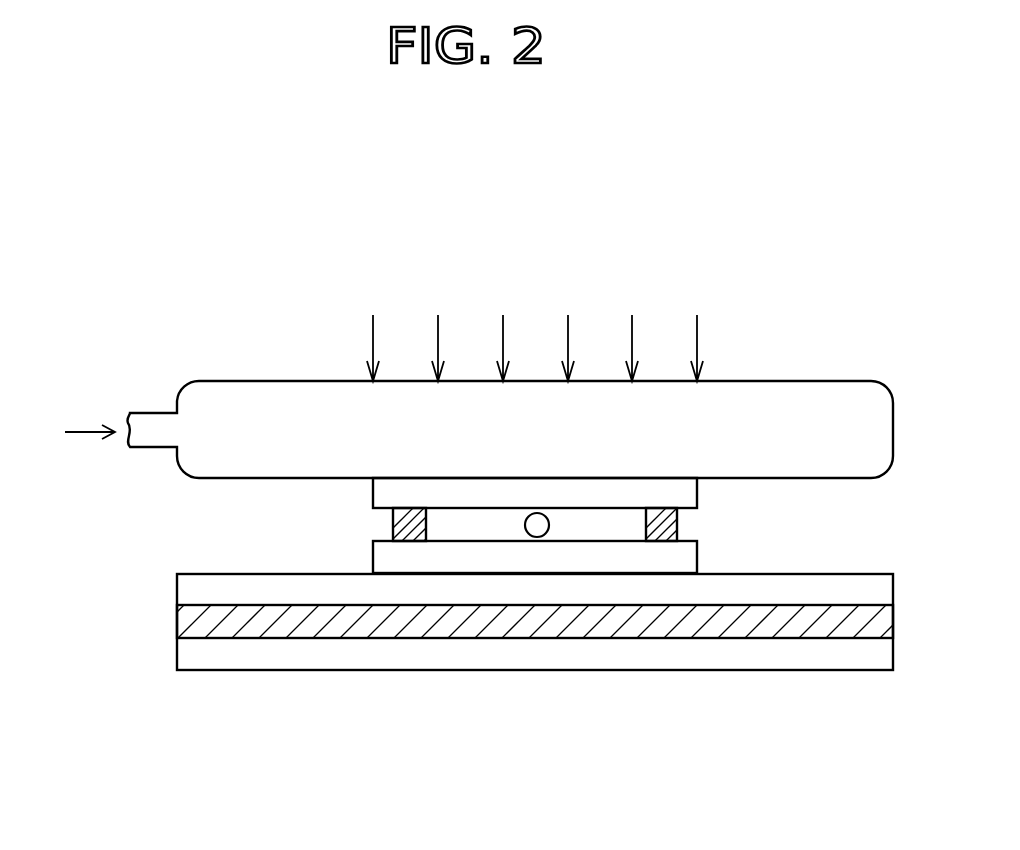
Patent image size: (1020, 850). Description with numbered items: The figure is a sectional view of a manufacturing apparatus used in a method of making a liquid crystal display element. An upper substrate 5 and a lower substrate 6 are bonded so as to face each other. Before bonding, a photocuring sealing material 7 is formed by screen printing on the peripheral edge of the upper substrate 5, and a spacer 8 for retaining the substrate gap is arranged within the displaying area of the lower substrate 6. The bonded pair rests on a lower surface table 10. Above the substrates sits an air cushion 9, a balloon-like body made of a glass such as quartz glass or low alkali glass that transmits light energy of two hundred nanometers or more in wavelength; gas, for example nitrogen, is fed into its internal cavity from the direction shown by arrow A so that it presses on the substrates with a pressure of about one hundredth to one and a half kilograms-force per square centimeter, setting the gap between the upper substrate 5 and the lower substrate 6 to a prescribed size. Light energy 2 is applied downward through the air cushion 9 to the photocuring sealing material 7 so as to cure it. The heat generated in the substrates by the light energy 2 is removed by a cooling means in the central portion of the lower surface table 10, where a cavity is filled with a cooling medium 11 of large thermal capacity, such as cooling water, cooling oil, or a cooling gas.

The light energy 2 is at (565, 342).
The upper substrate 5 is at (383, 503).
The lower substrate 6 is at (407, 560).
The photocuring sealing material 7 is at (665, 527).
The spacer 8 is at (537, 525).
The air cushion 9 is at (237, 403).
The lower surface table 10 is at (817, 652).
The cooling medium 11 is at (707, 620).
The arrow A is at (75, 432).